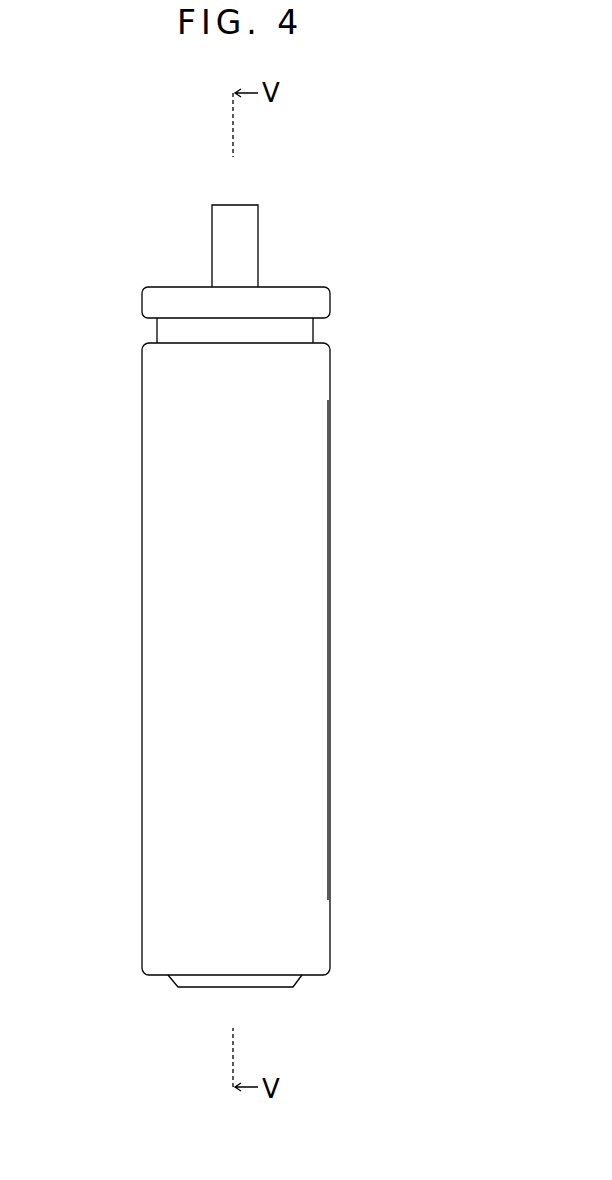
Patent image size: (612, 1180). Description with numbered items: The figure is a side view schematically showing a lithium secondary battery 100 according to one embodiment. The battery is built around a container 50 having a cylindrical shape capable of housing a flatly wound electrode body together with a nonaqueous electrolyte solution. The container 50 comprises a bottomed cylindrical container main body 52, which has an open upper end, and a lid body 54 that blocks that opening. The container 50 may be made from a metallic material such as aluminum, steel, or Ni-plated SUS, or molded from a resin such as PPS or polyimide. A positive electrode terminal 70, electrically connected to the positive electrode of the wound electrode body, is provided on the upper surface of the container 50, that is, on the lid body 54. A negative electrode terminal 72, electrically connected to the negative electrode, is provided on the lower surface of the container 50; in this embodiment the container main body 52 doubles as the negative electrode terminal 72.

The lithium secondary battery 100 is at (371, 256).
The container 50 is at (133, 776).
The container main body 52 is at (315, 760).
The lid body 54 is at (160, 302).
The positive electrode terminal 70 is at (248, 200).
The negative electrode terminal 72 is at (193, 984).